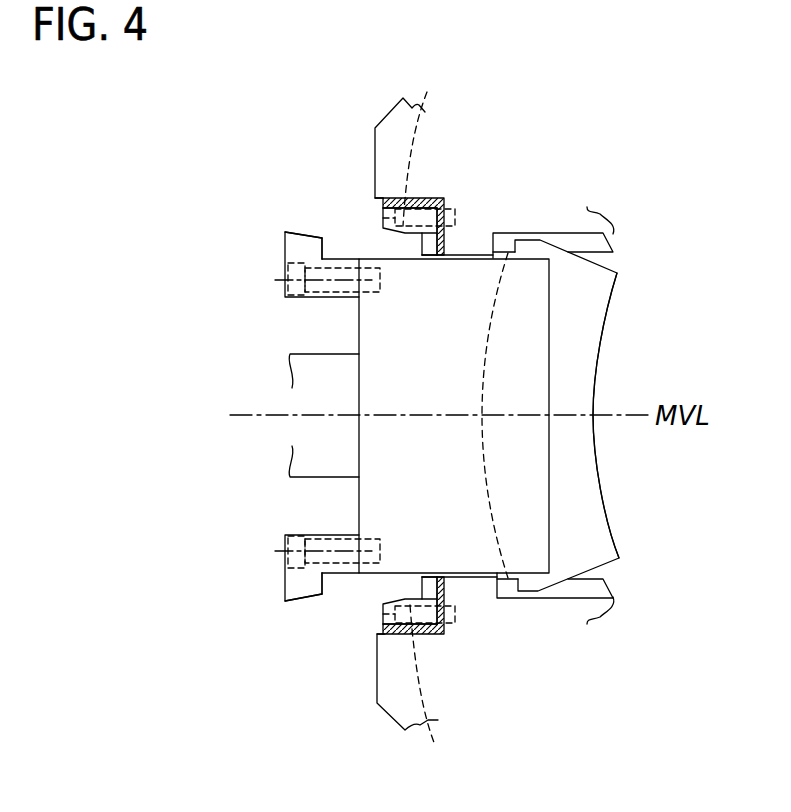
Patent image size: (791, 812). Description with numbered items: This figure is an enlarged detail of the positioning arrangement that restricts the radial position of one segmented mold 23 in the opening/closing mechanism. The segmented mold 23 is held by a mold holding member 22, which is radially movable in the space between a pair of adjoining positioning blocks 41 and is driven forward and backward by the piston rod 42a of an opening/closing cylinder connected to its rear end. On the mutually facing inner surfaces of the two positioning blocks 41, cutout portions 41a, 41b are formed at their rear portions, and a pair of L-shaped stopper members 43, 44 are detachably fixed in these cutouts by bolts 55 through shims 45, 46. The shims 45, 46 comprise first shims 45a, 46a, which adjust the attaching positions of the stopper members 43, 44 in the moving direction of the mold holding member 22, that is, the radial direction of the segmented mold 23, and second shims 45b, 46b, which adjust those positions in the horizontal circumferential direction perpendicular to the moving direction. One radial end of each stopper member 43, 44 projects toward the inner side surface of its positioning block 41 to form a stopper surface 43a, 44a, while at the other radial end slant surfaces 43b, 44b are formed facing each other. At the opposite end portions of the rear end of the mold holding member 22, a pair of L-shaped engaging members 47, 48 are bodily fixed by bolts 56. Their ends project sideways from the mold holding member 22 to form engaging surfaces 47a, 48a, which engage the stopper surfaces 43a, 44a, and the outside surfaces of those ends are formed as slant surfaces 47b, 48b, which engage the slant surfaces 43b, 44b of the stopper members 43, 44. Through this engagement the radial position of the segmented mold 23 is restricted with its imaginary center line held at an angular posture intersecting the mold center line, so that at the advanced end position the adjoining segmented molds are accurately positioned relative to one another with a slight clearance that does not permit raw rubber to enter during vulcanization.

The mold holding member 22 is at (532, 508).
The segmented mold 23 is at (583, 335).
The positioning block 41 is at (394, 130).
The cutout portion 41a is at (395, 231).
The cutout portion 41b is at (381, 636).
The piston rod 42a is at (300, 454).
The stopper member 43 is at (374, 214).
The stopper surface 43a is at (418, 243).
The slant surface 43b is at (385, 230).
The stopper member 44 is at (375, 616).
The stopper surface 44a is at (413, 582).
The slant surface 44b is at (386, 600).
The shim 45 is at (528, 145).
The first shim 45a is at (445, 241).
The second shim 45b is at (423, 194).
The shim 46 is at (547, 685).
The first shim 46a is at (445, 590).
The second shim 46b is at (418, 638).
The engaging member 47 is at (276, 254).
The engaging surface 47a is at (327, 237).
The slant surface 47b is at (305, 232).
The engaging member 48 is at (274, 581).
The engaging surface 48a is at (330, 585).
The slant surface 48b is at (310, 597).
The bolt 55 is at (428, 421).
The bolt 56 is at (330, 283).